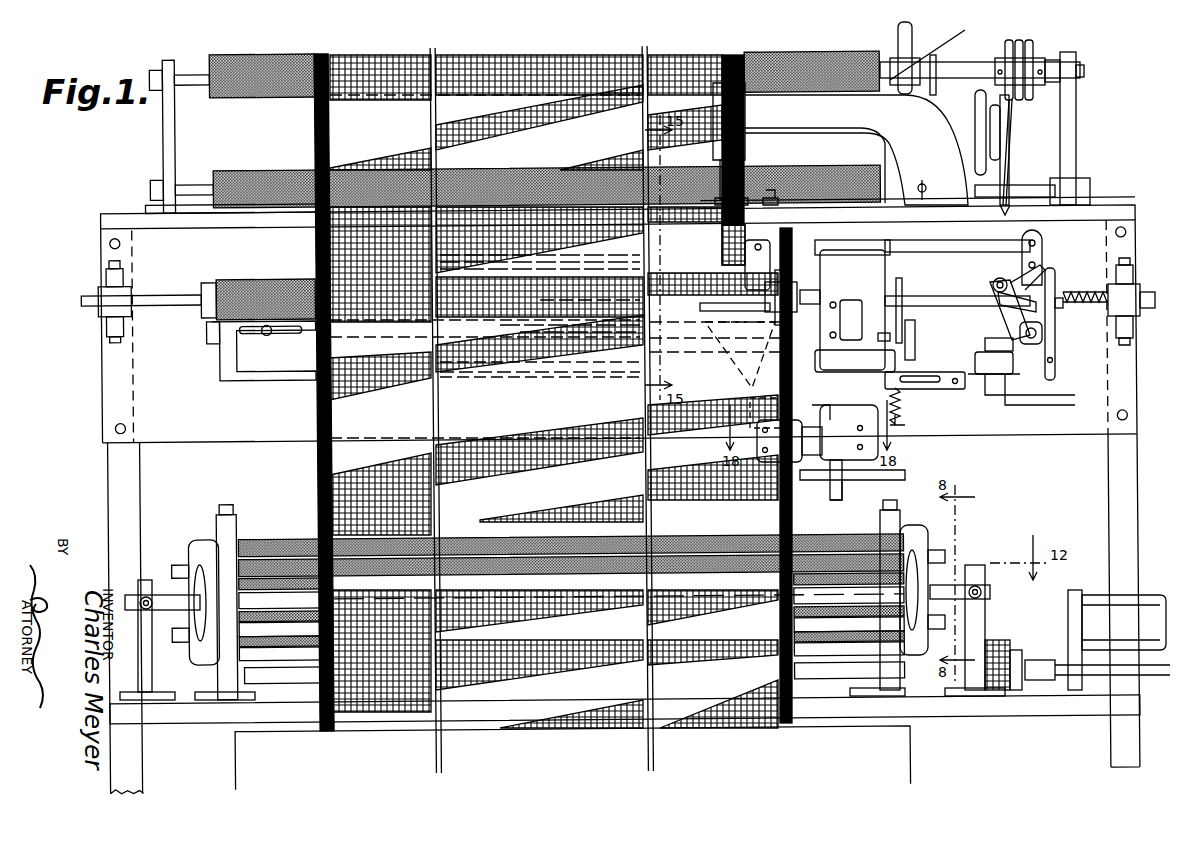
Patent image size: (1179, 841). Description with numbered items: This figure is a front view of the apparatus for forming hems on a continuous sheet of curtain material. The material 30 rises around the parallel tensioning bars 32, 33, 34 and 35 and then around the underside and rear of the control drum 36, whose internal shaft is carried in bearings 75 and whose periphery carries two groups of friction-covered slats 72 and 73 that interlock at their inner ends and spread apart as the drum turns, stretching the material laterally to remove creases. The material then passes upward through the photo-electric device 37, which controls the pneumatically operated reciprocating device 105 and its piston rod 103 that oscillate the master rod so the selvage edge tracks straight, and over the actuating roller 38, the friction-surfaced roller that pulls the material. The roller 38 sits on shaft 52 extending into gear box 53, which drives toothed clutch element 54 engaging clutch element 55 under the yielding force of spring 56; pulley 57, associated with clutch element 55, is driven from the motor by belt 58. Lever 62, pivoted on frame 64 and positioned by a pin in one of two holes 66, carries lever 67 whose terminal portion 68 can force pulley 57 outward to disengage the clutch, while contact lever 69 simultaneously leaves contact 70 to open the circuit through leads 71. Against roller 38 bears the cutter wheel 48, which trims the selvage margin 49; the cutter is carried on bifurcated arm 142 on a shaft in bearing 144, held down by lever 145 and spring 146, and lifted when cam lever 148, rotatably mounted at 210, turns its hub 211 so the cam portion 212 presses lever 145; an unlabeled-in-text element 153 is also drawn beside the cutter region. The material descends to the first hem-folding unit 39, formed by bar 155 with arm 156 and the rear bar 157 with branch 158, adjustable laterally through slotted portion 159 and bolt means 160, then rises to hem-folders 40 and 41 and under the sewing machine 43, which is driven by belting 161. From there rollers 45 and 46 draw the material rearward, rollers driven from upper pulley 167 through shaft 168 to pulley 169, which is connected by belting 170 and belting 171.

The material 30 is at (570, 720).
The tensioning bar 32 is at (280, 655).
The tensioning bar 33 is at (300, 672).
The tensioning bar 34 is at (258, 596).
The tensioning bar 35 is at (280, 628).
The control drum 36 is at (866, 529).
The photo-electric device 37 is at (813, 468).
The roller 38 is at (492, 290).
The first hem-folding unit 39 is at (222, 393).
The second hem-folder 40 is at (720, 233).
The third hem-folder 41 is at (743, 200).
The sewing machine 43 is at (833, 115).
The roller 45 is at (265, 172).
The roller 46 is at (270, 60).
The cutter wheel 48 is at (765, 300).
The selvage margin 49 is at (800, 745).
The shaft 52 is at (828, 295).
The gear box 53 is at (850, 260).
The toothed clutch element 54 is at (1000, 303).
The clutch element 55 is at (1045, 265).
The spring 56 is at (1100, 282).
The pulley 57 is at (1063, 305).
The belt 58 is at (1056, 345).
The lever 62 is at (1013, 322).
The frame 64 is at (992, 285).
The holes 66 is at (1030, 232).
The lever 67 is at (1044, 320).
The terminal portion 68 is at (1070, 290).
The contact lever 69 is at (985, 345).
The contact 70 is at (975, 362).
The leads 71 is at (1040, 400).
The slats 72 is at (390, 545).
The slats 73 is at (700, 540).
The bearings 75 is at (978, 568).
The piston rod 103 is at (1035, 650).
The pneumatically operated reciprocating device 105 is at (1088, 580).
The bifurcated arm 142 is at (705, 308).
The bearing 144 is at (840, 370).
The lever 145 is at (900, 372).
The spring 146 is at (905, 408).
The cam lever 148 is at (910, 300).
The bracket 153 is at (745, 275).
The bar 155 is at (530, 370).
The arm 156 is at (848, 325).
The rear bar 157 is at (590, 310).
The branch 158 is at (752, 398).
The slotted portion 159 is at (285, 340).
The bolt means 160 is at (262, 335).
The belting 161 is at (1000, 175).
The upper pulley 167 is at (915, 35).
The shaft 168 is at (985, 60).
The pulley 169 is at (1010, 42).
The belting 170 is at (1010, 130).
The belting 171 is at (1052, 42).
The rotatable mounting 210 is at (908, 278).
The hub 211 is at (878, 337).
The cam portion 212 is at (912, 330).